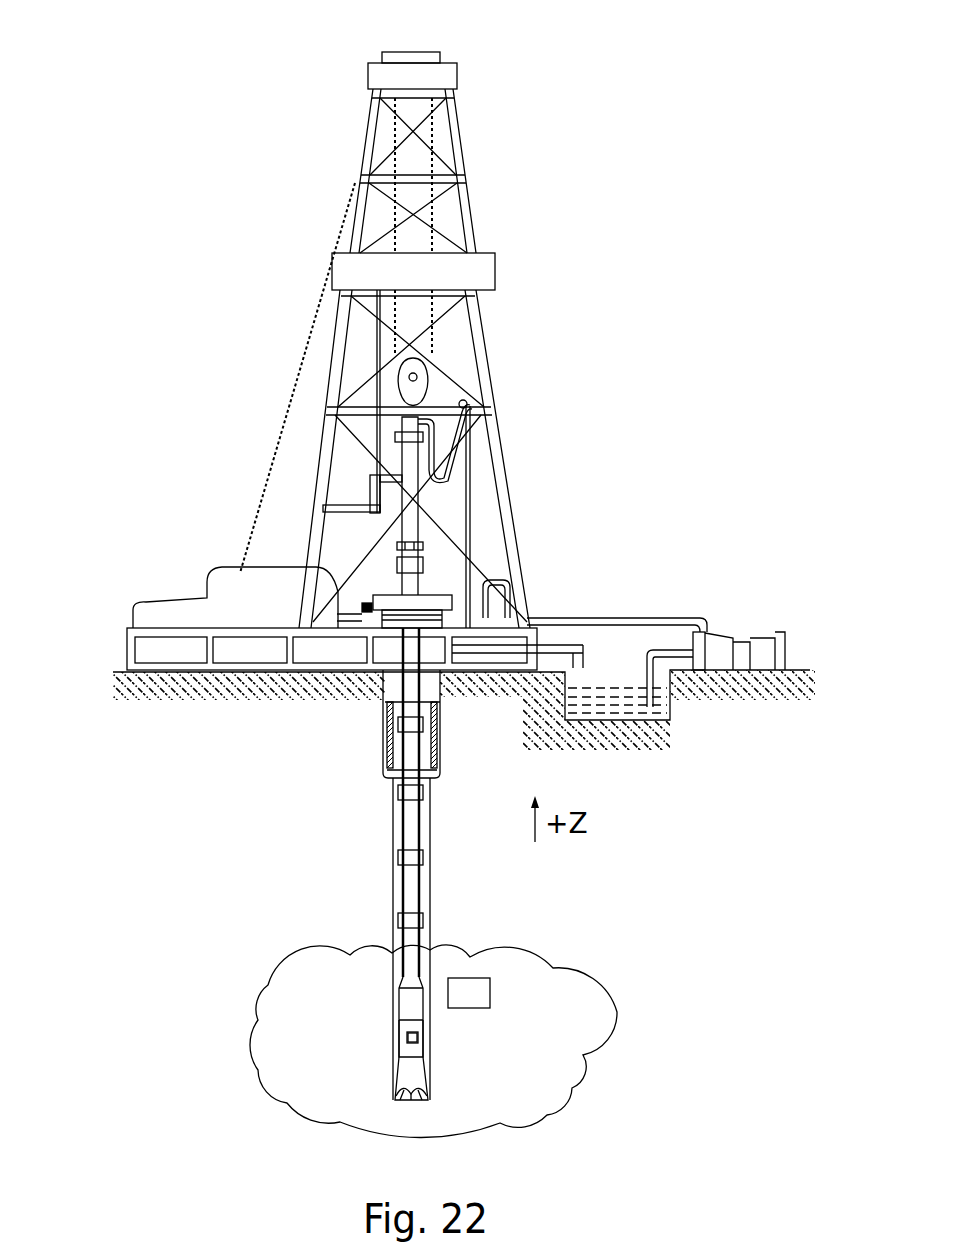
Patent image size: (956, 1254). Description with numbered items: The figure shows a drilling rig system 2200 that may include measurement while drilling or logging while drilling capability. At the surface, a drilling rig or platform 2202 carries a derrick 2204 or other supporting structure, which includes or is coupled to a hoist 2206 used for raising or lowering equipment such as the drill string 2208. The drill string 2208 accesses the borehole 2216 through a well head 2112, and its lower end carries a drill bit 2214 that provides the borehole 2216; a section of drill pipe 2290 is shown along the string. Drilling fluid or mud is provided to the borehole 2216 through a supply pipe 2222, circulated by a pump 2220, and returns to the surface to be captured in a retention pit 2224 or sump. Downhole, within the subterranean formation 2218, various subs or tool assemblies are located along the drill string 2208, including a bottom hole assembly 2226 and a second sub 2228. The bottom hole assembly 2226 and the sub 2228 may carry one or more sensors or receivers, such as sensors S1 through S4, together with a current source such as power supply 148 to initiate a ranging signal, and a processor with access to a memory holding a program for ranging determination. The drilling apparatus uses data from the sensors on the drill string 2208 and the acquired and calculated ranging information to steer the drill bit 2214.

The drilling rig system 2200 is at (229, 189).
The rig floor / platform 2202 is at (127, 650).
The derrick 2204 is at (474, 212).
The travelling block and hook 2206 is at (422, 363).
The well head 2112 is at (437, 593).
The supply pipe 2222 is at (650, 617).
The pump 2220 is at (725, 632).
The retention pit 2224 is at (612, 700).
The borehole 2216 is at (430, 843).
The drill string 2208 is at (421, 810).
The drill pipe section 2290 is at (420, 943).
The subterranean formation 2218 is at (583, 1013).
The second sub 2228 is at (399, 1000).
The bottom hole assembly 2226 is at (400, 1040).
The power supply 148 is at (419, 1037).
The drill bit 2214 is at (425, 1086).